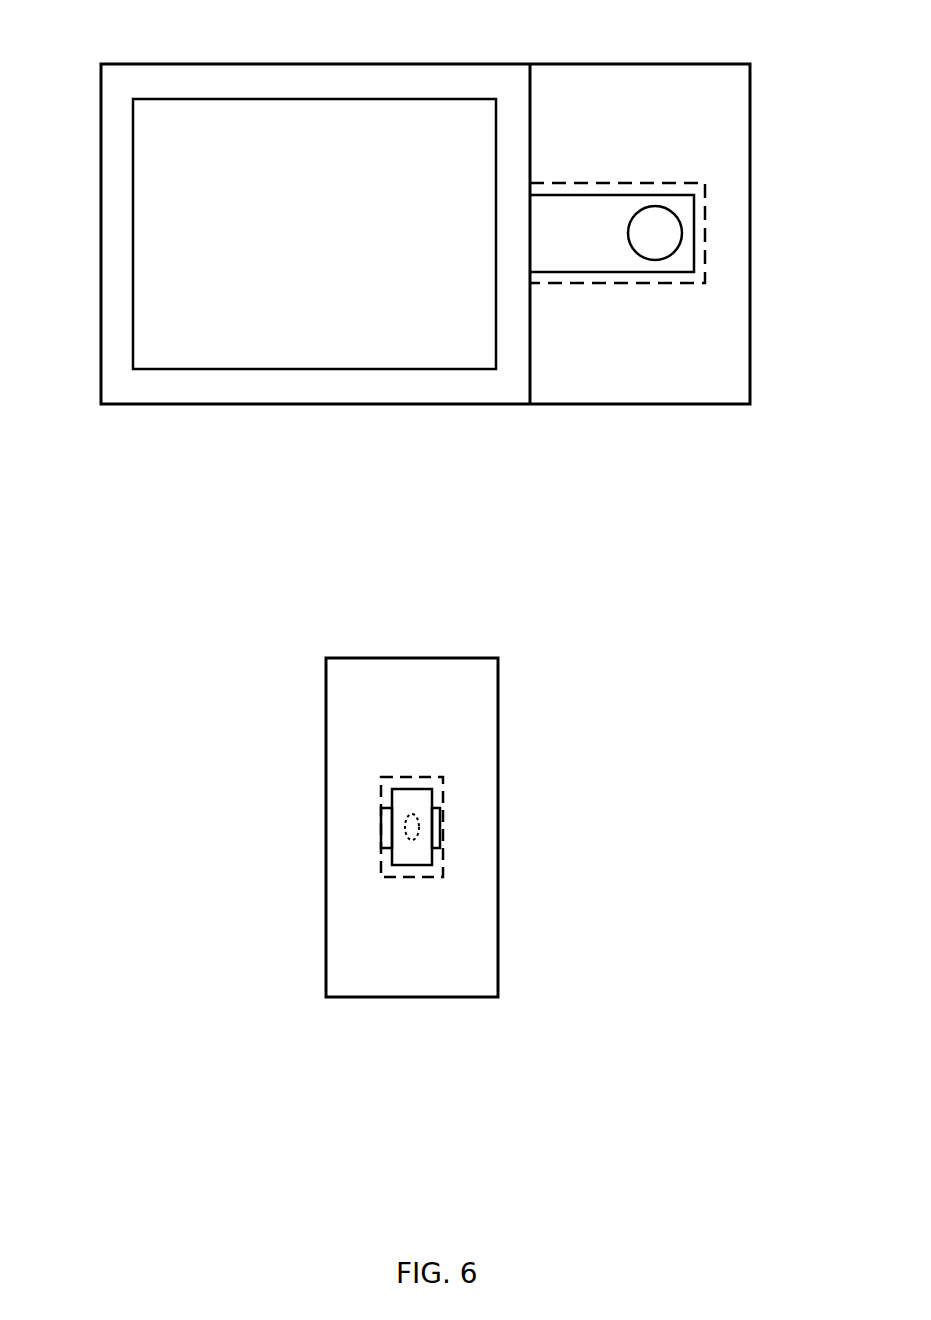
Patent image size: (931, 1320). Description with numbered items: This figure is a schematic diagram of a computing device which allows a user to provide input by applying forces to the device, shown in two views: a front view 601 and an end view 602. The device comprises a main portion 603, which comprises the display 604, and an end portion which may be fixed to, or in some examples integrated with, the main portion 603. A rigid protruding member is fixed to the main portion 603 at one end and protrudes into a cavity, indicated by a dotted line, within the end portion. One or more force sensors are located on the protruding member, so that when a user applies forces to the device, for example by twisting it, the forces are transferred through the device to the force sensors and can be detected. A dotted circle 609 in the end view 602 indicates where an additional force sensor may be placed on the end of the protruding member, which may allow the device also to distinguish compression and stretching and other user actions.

The front view 601 is at (440, 261).
The end view 602 is at (404, 880).
The main portion 603 is at (260, 63).
The display 604 is at (152, 230).
The dotted circle 609 is at (413, 838).